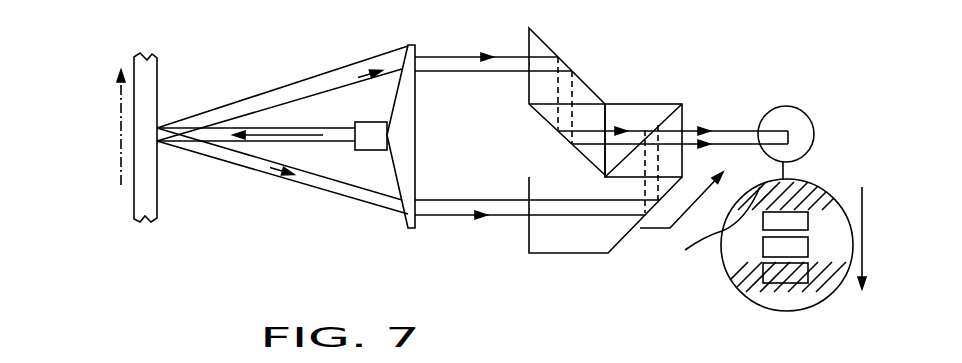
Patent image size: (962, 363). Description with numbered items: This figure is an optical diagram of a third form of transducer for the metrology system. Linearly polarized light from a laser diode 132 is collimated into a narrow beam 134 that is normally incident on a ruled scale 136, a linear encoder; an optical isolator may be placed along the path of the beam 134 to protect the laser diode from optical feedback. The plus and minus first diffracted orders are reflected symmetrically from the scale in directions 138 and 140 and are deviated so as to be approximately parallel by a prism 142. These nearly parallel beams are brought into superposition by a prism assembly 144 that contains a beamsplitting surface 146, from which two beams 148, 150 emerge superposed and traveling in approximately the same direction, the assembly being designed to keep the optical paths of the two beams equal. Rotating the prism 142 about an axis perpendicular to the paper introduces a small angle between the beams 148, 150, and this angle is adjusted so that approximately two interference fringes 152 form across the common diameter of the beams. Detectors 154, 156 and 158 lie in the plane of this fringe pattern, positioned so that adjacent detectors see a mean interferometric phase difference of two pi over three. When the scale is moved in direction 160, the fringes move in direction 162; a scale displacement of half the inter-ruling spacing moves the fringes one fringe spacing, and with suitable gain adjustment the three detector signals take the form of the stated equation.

The laser diode 132 is at (370, 150).
The narrow beam 134 is at (308, 142).
The ruled scale 136 is at (148, 89).
The direction of diffracted order 138 is at (297, 93).
The direction of diffracted order 140 is at (222, 153).
The prism 142 is at (430, 110).
The prism assembly 144 is at (588, 120).
The beamsplitting surface 146 is at (657, 125).
The emerging beam 148 is at (727, 118).
The emerging beam 150 is at (802, 147).
The interference fringes 152 is at (730, 286).
The detector 154 is at (810, 223).
The detector 156 is at (810, 247).
The detector 158 is at (755, 290).
The direction of scale movement 160 is at (120, 136).
The direction of fringe movement 162 is at (865, 217).